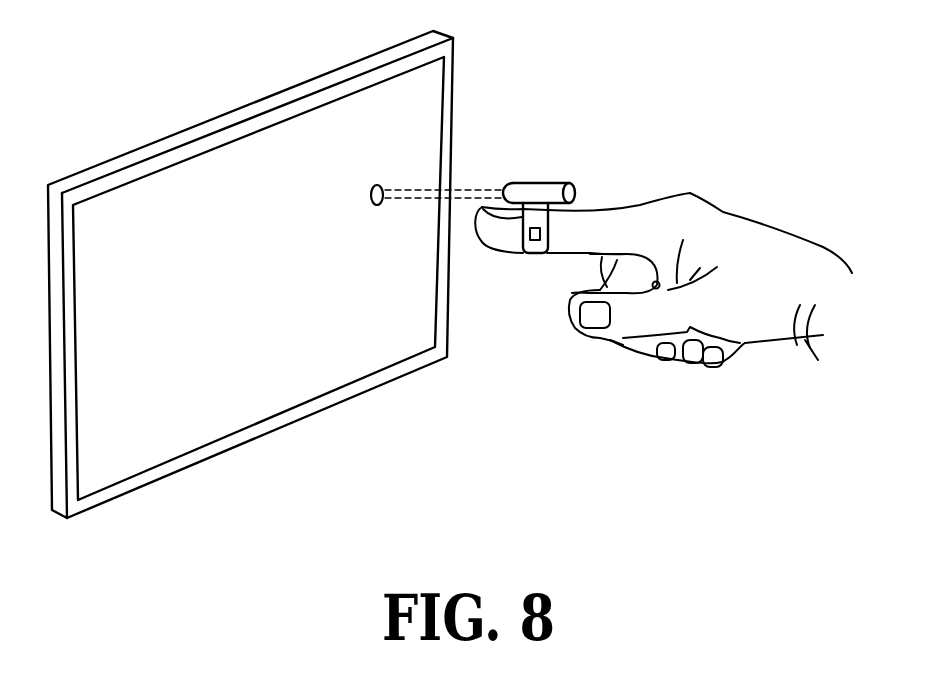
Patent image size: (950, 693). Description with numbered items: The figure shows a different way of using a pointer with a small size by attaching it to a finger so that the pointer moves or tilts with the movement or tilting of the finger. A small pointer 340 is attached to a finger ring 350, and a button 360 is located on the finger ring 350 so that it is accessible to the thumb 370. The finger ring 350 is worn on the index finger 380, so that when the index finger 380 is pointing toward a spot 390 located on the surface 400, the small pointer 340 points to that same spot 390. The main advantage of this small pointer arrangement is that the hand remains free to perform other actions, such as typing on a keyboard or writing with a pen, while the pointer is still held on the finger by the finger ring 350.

The small pointer 340 is at (530, 182).
The finger ring 350 is at (523, 233).
The button 360 is at (537, 241).
The thumb 370 is at (618, 333).
The index finger 380 is at (463, 190).
The spot 390 is at (370, 190).
The surface 400 is at (338, 405).